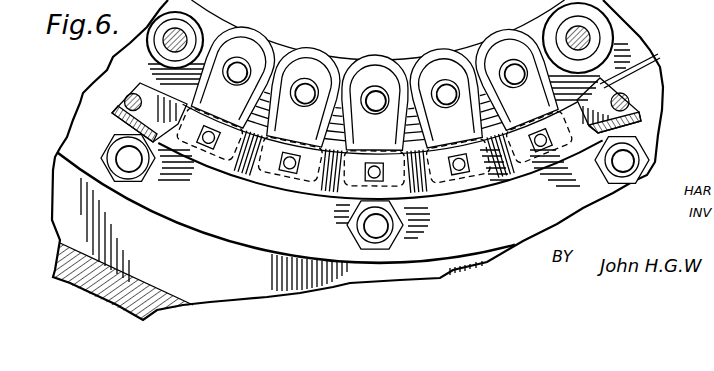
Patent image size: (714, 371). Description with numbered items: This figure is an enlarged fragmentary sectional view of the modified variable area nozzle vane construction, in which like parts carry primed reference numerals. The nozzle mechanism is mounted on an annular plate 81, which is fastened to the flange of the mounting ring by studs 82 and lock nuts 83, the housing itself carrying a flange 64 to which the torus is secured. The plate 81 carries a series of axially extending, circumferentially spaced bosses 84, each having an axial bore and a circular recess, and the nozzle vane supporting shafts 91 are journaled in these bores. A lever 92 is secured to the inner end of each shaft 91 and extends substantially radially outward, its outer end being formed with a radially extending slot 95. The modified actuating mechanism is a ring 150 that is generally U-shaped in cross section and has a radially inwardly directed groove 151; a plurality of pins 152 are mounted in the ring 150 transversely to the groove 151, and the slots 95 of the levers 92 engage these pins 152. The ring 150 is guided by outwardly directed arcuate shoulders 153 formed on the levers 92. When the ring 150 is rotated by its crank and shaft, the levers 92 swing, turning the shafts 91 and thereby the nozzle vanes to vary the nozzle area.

The flange 64 is at (172, 310).
The annular plate 81 is at (235, 237).
The stud 82 is at (140, 168).
The lock nut 83 is at (112, 148).
The boss 84 is at (421, 64).
The shaft 91 is at (302, 84).
The lever 92 is at (358, 87).
The slot 95 is at (408, 216).
The ring 150 is at (200, 172).
The groove 151 is at (150, 122).
The pin 152 is at (128, 98).
The arcuate shoulder 153 is at (488, 152).